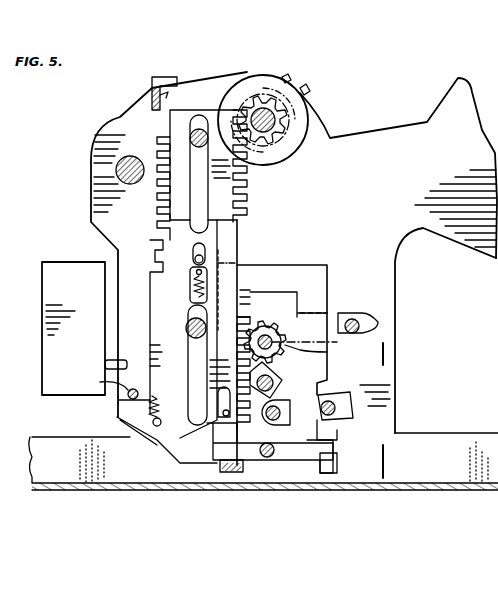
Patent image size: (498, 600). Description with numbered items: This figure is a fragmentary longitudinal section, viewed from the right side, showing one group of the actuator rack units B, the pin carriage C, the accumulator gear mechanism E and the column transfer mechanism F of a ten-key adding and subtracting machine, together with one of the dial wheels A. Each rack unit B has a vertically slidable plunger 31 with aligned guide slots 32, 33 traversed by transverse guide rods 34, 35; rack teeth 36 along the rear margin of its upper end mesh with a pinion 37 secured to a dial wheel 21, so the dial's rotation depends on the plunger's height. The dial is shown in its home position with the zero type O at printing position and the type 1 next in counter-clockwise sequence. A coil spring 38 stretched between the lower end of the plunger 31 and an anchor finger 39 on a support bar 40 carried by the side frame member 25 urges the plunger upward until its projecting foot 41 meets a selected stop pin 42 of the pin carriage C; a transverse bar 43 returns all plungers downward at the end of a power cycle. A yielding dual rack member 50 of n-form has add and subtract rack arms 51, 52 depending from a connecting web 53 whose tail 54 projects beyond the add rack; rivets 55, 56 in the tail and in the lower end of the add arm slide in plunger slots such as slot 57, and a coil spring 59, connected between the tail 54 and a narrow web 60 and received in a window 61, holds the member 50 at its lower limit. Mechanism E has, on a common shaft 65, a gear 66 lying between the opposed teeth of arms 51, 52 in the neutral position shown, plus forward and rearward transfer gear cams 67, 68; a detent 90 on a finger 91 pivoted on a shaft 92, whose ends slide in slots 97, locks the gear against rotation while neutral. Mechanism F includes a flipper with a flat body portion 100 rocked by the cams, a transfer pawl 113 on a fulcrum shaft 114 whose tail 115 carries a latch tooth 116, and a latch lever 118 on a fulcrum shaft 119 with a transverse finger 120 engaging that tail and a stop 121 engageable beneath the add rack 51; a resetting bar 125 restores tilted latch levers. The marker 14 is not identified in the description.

The type for digit one 1 is at (286, 75).
The dial wheels A is at (305, 65).
The zero type O is at (307, 92).
The dial wheel 21 is at (312, 100).
The side frame member 25 is at (95, 137).
The actuator rack units B is at (145, 200).
The pin carriage C is at (62, 258).
The transverse guide rod 34 is at (190, 138).
The rack teeth 36 is at (246, 210).
The pinion 37 is at (258, 150).
The coil spring 38 is at (168, 97).
The anchor finger 39 is at (177, 80).
The support bar 40 is at (152, 90).
The plunger 31 is at (238, 238).
The guide slot 32 is at (240, 223).
The guide slot 33 is at (188, 372).
The transverse guide rod 35 is at (186, 330).
The projecting foot 41 is at (140, 437).
The stop pin 42 is at (105, 357).
The transverse bar 43 is at (100, 384).
The yielding dual rack member 50 is at (328, 262).
The add rack arm 51 is at (222, 462).
The subtract rack arm 52 is at (316, 462).
The connecting web 53 is at (300, 265).
The tail 54 is at (210, 244).
The rivet 55 is at (158, 258).
The rivet 56 is at (173, 425).
The slot 57 is at (150, 242).
The coil spring 59 is at (185, 278).
The narrow web 60 is at (190, 298).
The window 61 is at (190, 284).
The common shaft 65 is at (300, 368).
The gear 66 is at (327, 350).
The forward transfer gear cam 67 is at (300, 392).
The rearward transfer gear cam 68 is at (237, 352).
The detent 90 is at (268, 316).
The finger 91 is at (338, 312).
The shaft 92 is at (357, 334).
The slots 97 is at (358, 324).
The flat body portion 100 is at (396, 397).
The transfer pawl 113 is at (340, 418).
The fulcrum shaft 114 is at (336, 405).
The tail 115 is at (338, 440).
The latch tooth 116 is at (340, 472).
The latch lever 118 is at (250, 470).
The fulcrum shaft 119 is at (268, 460).
The transverse finger 120 is at (320, 475).
The stop 121 is at (212, 470).
The resetting bar 125 is at (232, 474).
The distance 14 is at (386, 468).
The accumulator gear mechanism E is at (314, 290).
The column transfer mechanism F is at (382, 369).